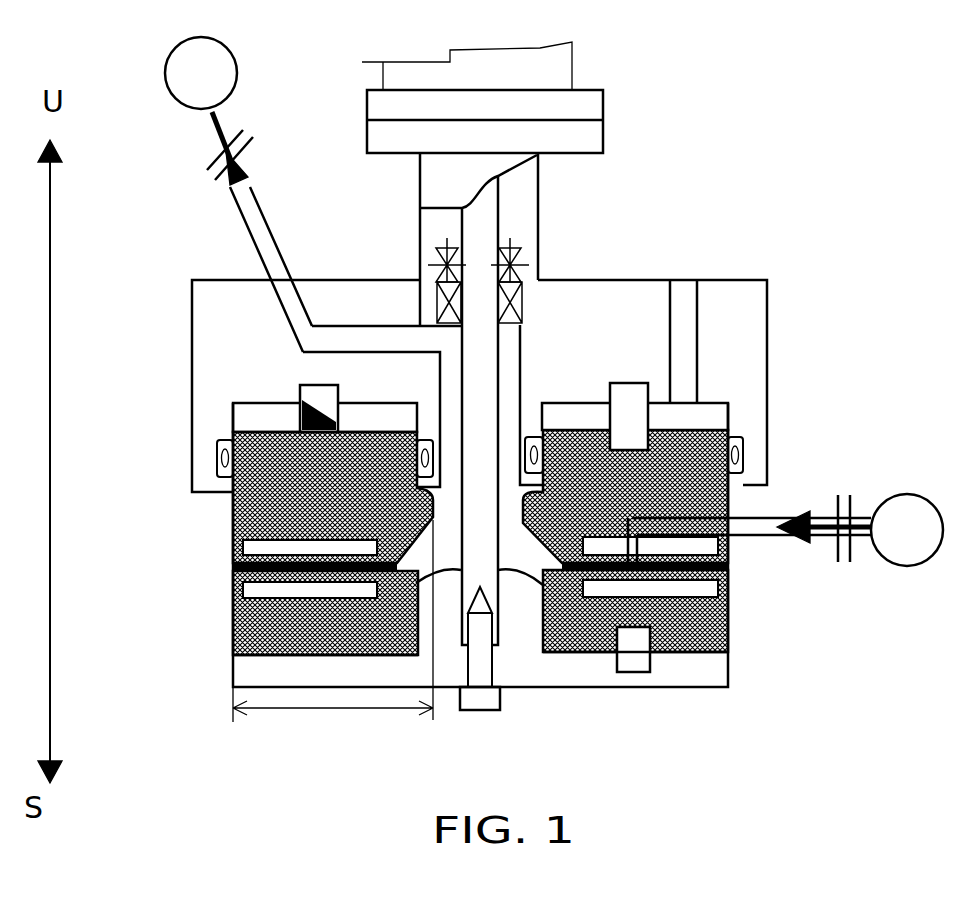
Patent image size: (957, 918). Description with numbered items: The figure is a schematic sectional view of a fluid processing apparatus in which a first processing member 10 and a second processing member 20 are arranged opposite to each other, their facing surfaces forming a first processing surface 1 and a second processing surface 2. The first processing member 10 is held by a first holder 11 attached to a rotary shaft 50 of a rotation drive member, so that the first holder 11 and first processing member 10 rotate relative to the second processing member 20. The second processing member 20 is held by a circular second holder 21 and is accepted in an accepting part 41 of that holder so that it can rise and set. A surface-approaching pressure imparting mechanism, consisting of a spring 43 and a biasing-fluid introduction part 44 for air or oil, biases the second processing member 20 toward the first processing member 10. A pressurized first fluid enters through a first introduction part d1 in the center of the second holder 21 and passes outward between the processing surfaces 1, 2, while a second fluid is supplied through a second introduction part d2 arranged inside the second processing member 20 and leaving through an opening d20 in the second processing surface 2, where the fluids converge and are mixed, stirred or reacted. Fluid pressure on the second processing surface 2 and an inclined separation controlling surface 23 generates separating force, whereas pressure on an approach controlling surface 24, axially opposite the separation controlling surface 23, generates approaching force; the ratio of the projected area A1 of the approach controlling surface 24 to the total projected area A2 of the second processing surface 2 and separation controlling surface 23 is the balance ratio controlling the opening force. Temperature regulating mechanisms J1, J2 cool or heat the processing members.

The first processing surface 1 is at (330, 582).
The second processing surface 2 is at (345, 550).
The first processing member 10 is at (728, 637).
The first holder 11 is at (680, 665).
The second processing member 20 is at (233, 436).
The second holder 21 is at (742, 340).
The separation controlling surface 23 is at (528, 532).
The approach controlling surface 24 is at (512, 470).
The accepting part 41 is at (392, 415).
The spring 43 is at (300, 415).
The biasing-fluid introduction part 44 is at (680, 320).
The rotary shaft 50 is at (478, 495).
The temperature regulating mechanism J1 is at (320, 612).
The temperature regulating mechanism J2 is at (275, 548).
The first introduction part d1 is at (267, 250).
The second introduction part d2 is at (742, 528).
The opening d20 is at (680, 430).
The projected area of the approach controlling surface A1 is at (428, 492).
The total projected area of the second processing surface and separation controlling A2 is at (325, 710).